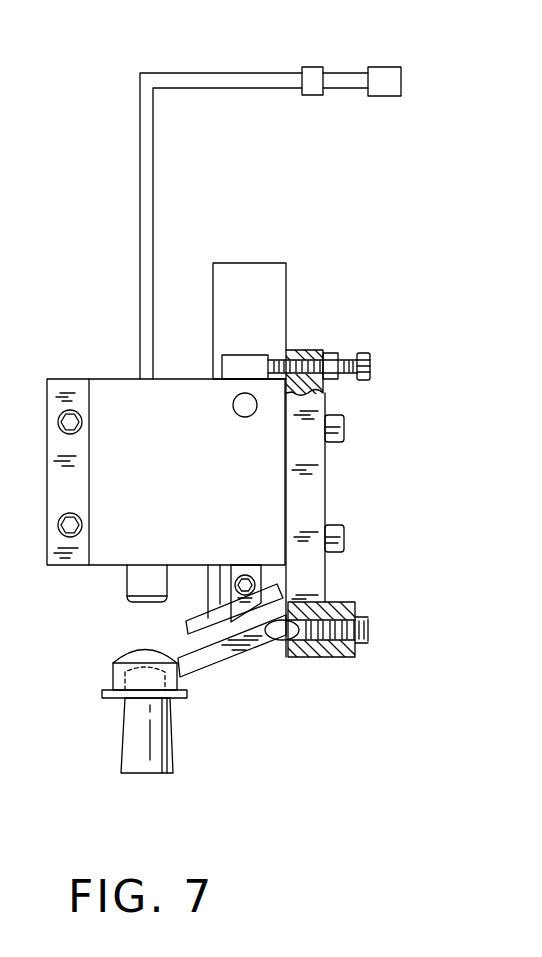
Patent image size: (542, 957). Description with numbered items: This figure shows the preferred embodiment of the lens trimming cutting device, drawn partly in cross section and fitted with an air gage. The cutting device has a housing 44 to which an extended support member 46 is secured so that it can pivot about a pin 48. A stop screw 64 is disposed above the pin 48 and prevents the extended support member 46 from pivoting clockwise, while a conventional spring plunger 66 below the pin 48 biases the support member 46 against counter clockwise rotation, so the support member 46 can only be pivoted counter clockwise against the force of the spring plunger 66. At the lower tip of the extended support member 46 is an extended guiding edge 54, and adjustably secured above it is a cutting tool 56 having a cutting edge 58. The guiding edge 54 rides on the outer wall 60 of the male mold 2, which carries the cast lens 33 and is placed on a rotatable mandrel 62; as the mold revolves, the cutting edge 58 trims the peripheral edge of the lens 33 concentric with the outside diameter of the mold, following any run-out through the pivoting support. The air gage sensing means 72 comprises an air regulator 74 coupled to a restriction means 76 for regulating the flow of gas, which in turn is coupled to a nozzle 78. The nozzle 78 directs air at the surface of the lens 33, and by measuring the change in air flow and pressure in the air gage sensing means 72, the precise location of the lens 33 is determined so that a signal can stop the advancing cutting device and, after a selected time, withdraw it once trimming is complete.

The male mold 2 is at (136, 698).
The cast lens 33 is at (125, 656).
The housing 44 is at (290, 274).
The extended support member 46 is at (243, 355).
The pin 48 is at (237, 411).
The guiding edge 54 is at (178, 672).
The cutting tool 56 is at (186, 643).
The cutting edge 58 is at (171, 656).
The outer wall 60 is at (113, 686).
The rotatable mandrel 62 is at (160, 714).
The stop screw 64 is at (341, 382).
The spring plunger 66 is at (368, 630).
The air gage sensing means 72 is at (331, 62).
The air regulator 74 is at (383, 70).
The restriction means 76 is at (313, 95).
The nozzle 78 is at (127, 588).